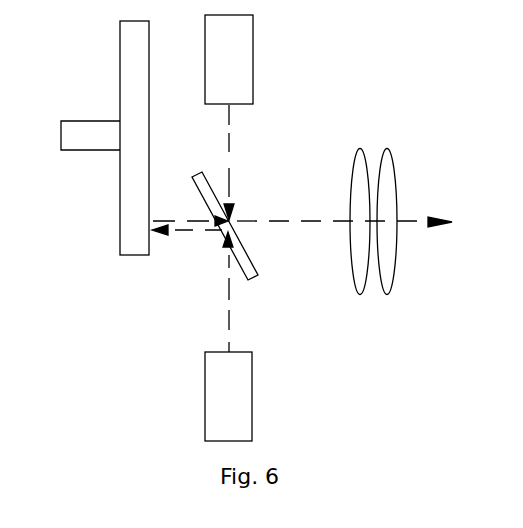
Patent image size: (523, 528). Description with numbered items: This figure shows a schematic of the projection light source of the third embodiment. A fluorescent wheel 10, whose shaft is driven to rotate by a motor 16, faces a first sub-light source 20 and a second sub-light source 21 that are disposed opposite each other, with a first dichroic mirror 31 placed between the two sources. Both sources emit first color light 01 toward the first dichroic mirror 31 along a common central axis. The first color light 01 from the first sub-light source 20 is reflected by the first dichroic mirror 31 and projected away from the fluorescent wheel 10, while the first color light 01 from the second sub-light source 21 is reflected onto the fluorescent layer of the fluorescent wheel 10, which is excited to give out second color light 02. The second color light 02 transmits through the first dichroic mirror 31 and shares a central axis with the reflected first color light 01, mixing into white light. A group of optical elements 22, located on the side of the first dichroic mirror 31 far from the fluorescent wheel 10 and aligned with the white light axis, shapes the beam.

The fluorescent wheel 10 is at (132, 37).
The motor 16 is at (91, 142).
The first sub-light source 20 is at (228, 73).
The second sub-light source 21 is at (227, 397).
The group of optical elements 22 is at (405, 138).
The first dichroic mirror 31 is at (250, 260).
The first color light 01 is at (230, 172).
The second color light 02 is at (168, 218).